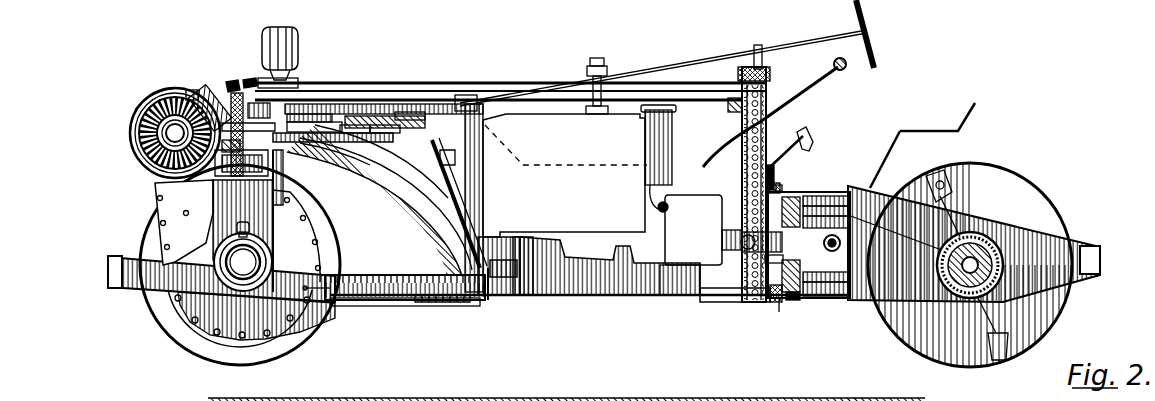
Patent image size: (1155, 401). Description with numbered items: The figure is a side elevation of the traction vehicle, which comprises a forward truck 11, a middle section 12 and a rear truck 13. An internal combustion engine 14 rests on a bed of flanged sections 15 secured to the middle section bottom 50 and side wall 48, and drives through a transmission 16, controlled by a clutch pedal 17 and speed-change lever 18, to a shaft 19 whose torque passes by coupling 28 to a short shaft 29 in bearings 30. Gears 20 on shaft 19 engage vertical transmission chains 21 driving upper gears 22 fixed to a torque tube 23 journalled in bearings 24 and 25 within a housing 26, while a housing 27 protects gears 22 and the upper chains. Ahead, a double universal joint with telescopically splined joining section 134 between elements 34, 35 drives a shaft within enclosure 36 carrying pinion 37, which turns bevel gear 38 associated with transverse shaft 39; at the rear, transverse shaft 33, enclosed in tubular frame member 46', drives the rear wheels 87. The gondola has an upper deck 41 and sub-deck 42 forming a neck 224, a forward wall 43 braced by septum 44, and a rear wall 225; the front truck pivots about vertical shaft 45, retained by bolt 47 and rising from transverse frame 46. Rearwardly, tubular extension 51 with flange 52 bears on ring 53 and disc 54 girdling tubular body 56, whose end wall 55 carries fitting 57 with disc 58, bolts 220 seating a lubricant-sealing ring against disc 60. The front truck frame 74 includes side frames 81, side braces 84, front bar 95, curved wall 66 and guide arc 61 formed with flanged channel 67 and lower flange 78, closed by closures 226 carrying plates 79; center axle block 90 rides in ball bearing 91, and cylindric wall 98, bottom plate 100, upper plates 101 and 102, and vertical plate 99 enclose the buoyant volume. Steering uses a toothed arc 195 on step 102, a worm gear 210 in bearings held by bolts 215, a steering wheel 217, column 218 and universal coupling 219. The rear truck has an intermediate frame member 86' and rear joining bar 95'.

The forward truck 11 is at (137, 193).
The middle section 12 is at (609, 311).
The rear truck 13 is at (1025, 158).
The internal combustion engine 14 is at (596, 215).
The flanged sections 15 is at (606, 266).
The transmission 16 is at (712, 230).
The clutch pedal 17 is at (791, 147).
The speed-change lever 18 is at (774, 112).
The shaft 19 is at (722, 240).
The gears 20 is at (744, 250).
The transmission chains 21 is at (744, 122).
The upper gears 22 is at (766, 105).
The torque tube 23 is at (632, 98).
The bearing 24 is at (292, 82).
The bearing 25 is at (728, 106).
The housing 26 is at (512, 83).
The housing 27 is at (754, 58).
The coupling 28 is at (756, 253).
The short shaft 29 is at (800, 222).
The bearings 30 is at (800, 258).
The transverse shaft 33 is at (830, 233).
The universal joint element 34 is at (251, 74).
The universal joint element 35 is at (231, 79).
The enclosure 36 is at (209, 101).
The pinion 37 is at (187, 85).
The bevel gear 38 is at (165, 97).
The transverse shaft 39 is at (150, 160).
The upper deck 41 is at (309, 112).
The sub-deck 42 is at (314, 123).
The forward wall 43 is at (448, 152).
The bracing wall 44 is at (322, 108).
The cylindric shaft 45 is at (231, 127).
The transverse frame 46 is at (233, 136).
The transverse frame member 46' is at (783, 179).
The bolt 47 is at (257, 109).
The side wall 48 is at (626, 276).
The bottom 50 is at (540, 290).
The tubular extension 51 is at (803, 193).
The flange 52 is at (815, 195).
The ring 53 is at (828, 195).
The annular disc 54 is at (840, 195).
The end wall 55 is at (768, 263).
The cylindric tubular body 56 is at (792, 300).
The fitting 57 is at (735, 299).
The disc 58 is at (772, 300).
The disc 60 is at (776, 172).
The guide arc 61 is at (492, 300).
The curved wall 66 is at (468, 246).
The flanged channel 67 is at (503, 259).
The front truck frame 74 is at (367, 208).
The lower flange 78 is at (476, 303).
The plate 79 is at (308, 287).
The side frames 81 is at (239, 210).
The side horizontal braces 84 is at (200, 258).
The intermediate end frame member 86' is at (974, 244).
The rear driving wheels 87 is at (322, 302).
The center axle block 90 is at (965, 308).
The radial ball bearing 91 is at (992, 236).
The horizontal front bar 95 is at (219, 270).
The rear joining bar 95' is at (1088, 251).
The cylindric shielding wall 98 is at (335, 158).
The vertical plate 99 is at (336, 178).
The horizontal bottom plate 100 is at (446, 305).
The upper horizontal plate 101 is at (338, 143).
The step 102 is at (385, 134).
The splined joining section 134 is at (258, 75).
The steering arc 195 is at (355, 134).
The worm gear 210 is at (400, 112).
The bolts 215 is at (418, 116).
The steering wheel 217 is at (874, 58).
The steering column 218 is at (690, 62).
The universal joint coupling 219 is at (462, 95).
The bolts 220 is at (738, 302).
The neck 224 is at (218, 160).
The rear wall 225 is at (790, 178).
The closures 226 is at (372, 300).